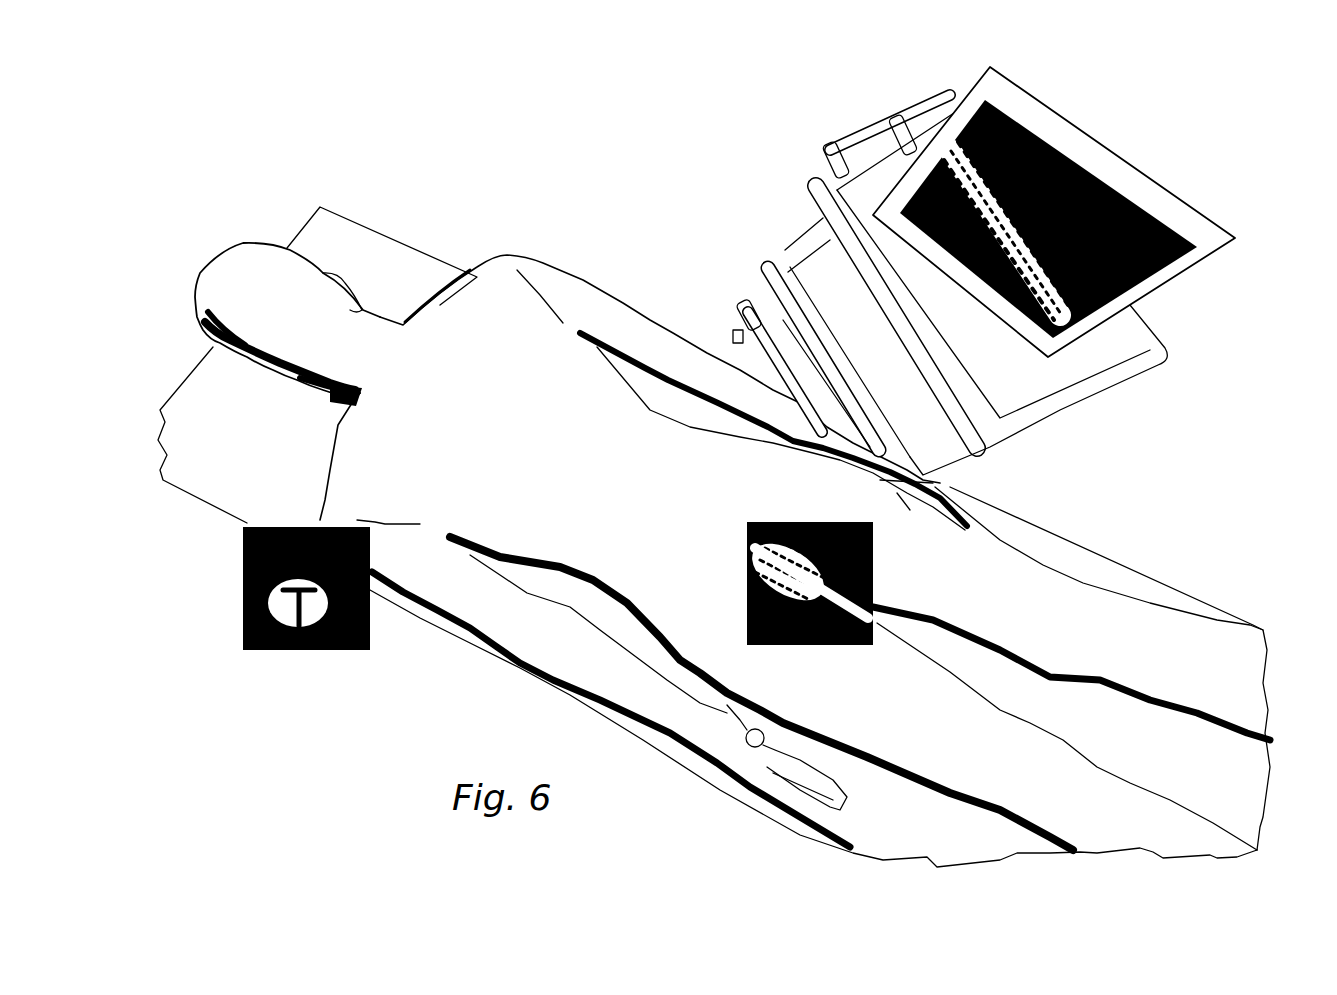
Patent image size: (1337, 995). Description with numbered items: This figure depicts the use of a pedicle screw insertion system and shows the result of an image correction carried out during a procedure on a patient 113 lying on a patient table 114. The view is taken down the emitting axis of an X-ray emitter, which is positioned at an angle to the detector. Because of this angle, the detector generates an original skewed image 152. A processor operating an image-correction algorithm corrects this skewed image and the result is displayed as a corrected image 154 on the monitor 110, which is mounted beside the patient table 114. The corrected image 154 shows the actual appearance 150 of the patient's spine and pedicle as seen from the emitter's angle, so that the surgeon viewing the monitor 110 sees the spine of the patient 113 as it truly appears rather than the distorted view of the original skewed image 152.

The monitor 110 is at (1070, 143).
The patient 113 is at (500, 288).
The patient table 114 is at (393, 273).
The actual appearance 150 is at (747, 632).
The original skewed image 152 is at (307, 650).
The corrected image 154 is at (1022, 132).